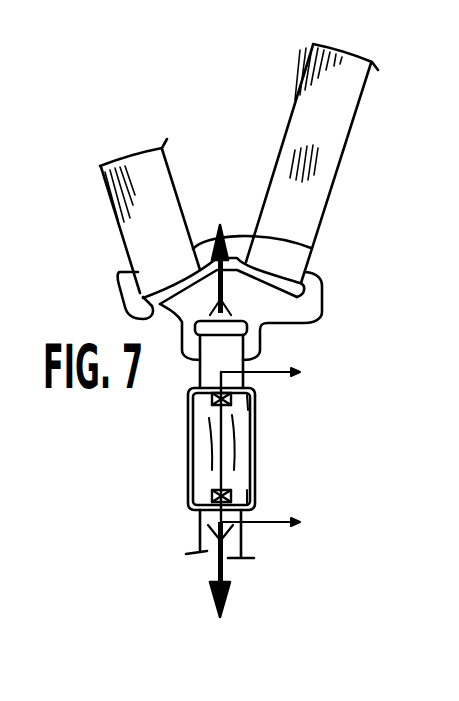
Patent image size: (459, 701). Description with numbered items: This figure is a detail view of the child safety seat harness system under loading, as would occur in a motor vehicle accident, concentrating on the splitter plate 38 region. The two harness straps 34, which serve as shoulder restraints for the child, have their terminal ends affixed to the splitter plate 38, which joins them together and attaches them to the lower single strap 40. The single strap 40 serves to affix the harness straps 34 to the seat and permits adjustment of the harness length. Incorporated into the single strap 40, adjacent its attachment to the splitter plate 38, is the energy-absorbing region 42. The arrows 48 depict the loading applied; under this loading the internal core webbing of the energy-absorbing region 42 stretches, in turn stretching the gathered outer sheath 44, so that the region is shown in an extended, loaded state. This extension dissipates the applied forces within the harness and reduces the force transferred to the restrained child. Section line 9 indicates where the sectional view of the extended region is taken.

The section line 9- 9 is at (270, 449).
The harness straps 34 is at (152, 253).
The splitter plate 38 is at (273, 308).
The single strap 40 is at (208, 519).
The energy-absorbing region 42 is at (282, 440).
The outer sheath 44 is at (203, 440).
The arrows 48 is at (310, 247).